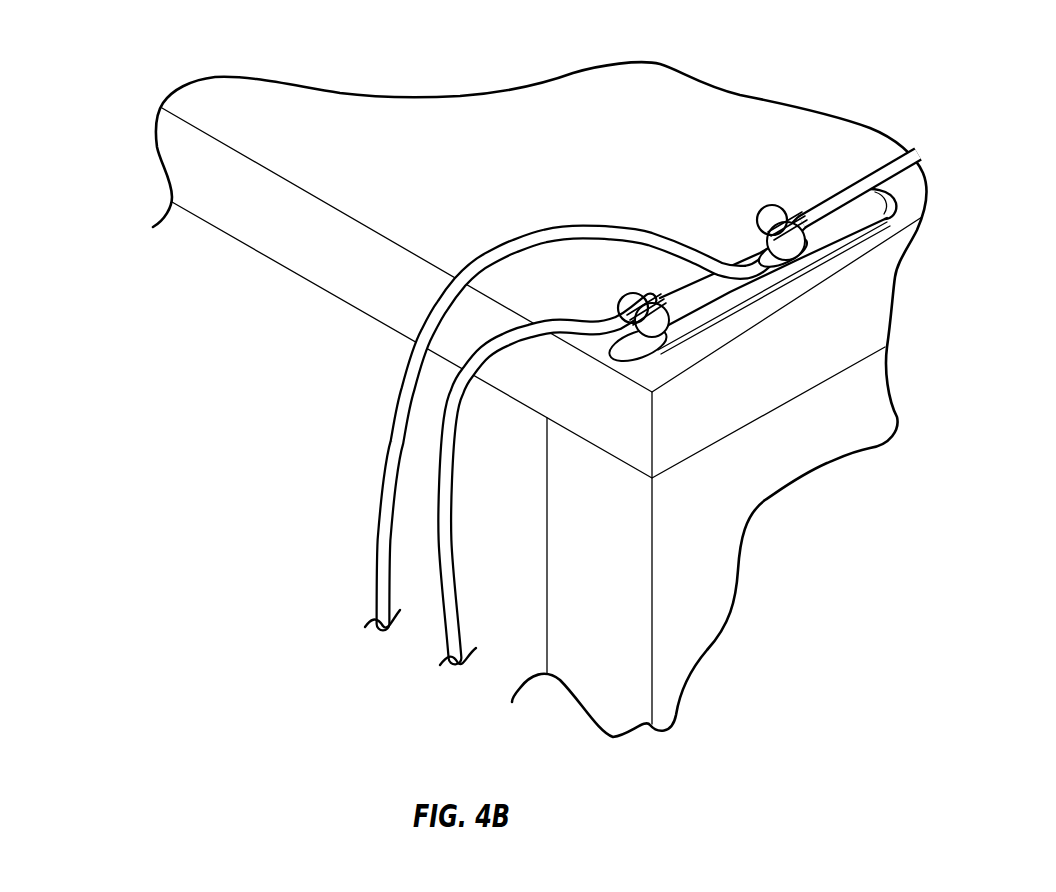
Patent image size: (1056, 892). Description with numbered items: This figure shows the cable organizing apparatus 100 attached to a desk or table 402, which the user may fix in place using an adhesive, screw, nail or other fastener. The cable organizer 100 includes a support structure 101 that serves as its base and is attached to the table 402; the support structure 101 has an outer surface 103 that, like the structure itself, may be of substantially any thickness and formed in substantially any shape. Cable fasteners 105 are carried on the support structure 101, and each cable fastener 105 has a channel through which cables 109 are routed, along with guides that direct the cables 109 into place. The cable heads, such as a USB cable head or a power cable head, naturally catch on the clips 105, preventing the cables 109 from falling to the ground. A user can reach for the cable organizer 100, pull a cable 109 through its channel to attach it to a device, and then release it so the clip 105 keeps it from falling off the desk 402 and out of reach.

The wall / panel block 402 is at (365, 247).
The cable organizing apparatus 100 is at (747, 311).
The support structure 101 is at (705, 317).
The outer surface 103 is at (855, 205).
The cable fastener 105 is at (793, 247).
The cables 109 is at (793, 273).